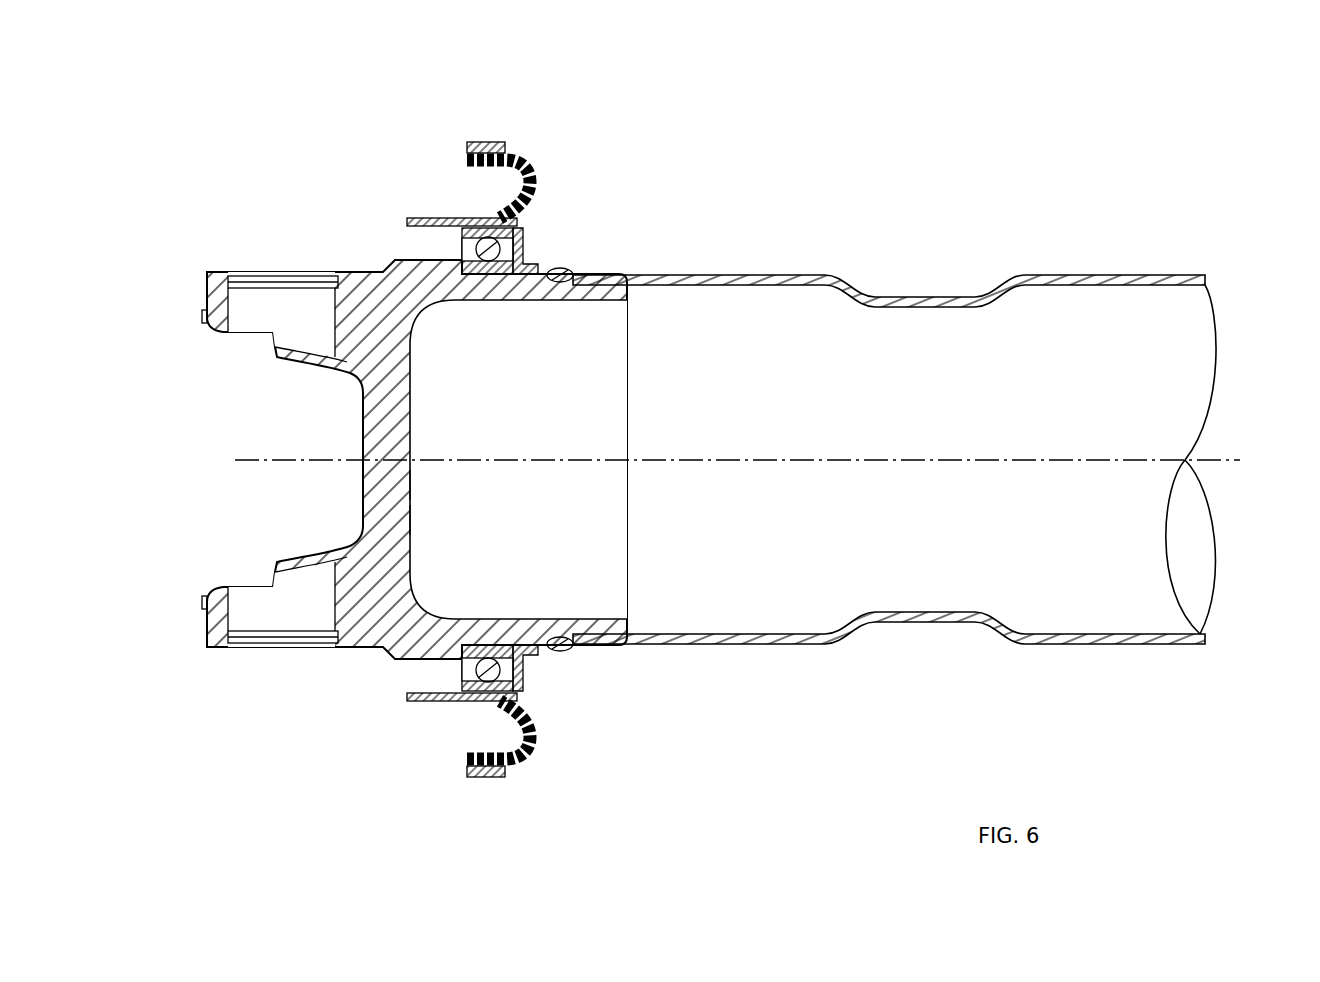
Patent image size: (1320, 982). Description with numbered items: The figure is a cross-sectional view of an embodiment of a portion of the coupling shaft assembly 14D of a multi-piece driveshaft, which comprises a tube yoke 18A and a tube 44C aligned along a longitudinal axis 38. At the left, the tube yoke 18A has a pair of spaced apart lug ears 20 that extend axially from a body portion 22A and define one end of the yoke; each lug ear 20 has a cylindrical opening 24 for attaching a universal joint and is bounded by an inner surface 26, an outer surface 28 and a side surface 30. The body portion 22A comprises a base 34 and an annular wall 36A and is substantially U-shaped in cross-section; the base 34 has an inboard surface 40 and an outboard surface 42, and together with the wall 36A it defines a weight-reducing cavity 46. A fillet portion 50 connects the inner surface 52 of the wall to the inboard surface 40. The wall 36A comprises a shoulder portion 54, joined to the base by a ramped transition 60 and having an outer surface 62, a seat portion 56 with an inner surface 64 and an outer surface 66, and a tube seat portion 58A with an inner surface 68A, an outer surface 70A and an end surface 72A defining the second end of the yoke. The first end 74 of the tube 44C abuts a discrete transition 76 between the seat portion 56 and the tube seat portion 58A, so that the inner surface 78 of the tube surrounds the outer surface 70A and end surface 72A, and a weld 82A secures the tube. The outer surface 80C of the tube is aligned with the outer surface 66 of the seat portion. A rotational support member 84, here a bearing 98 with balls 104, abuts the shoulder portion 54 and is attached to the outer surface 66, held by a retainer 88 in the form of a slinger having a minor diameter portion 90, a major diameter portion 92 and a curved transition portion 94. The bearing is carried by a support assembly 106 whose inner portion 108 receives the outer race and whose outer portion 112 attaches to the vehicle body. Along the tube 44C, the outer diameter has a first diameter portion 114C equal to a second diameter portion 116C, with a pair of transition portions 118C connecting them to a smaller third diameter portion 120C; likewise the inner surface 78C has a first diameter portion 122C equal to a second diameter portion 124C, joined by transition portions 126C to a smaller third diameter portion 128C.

The coupling shaft assembly 14D is at (193, 94).
The tube yoke 18A is at (352, 652).
The lug ears 20 is at (205, 303).
The body portion 22A is at (412, 408).
The cylindrical opening 24 is at (225, 270).
The inner surface 26 is at (312, 365).
The outer surface 28 is at (328, 270).
The side surface 30 is at (205, 294).
The base 34 is at (412, 484).
The wall 36A is at (472, 616).
The longitudinal axis 38 is at (1238, 460).
The inboard surface 40 is at (412, 520).
The outboard surface 42 is at (362, 482).
The tube 44C is at (1165, 275).
The cavity 46 is at (566, 412).
The fillet portion 50 is at (425, 315).
The inner surface 52 is at (478, 300).
The shoulder portion 54 is at (390, 260).
The seat portion 56 is at (515, 288).
The tube seat portion 58A is at (578, 300).
The ramped transition 60 is at (388, 660).
The outer surface 62 is at (405, 258).
The inner surface 64 is at (515, 622).
The outer surface 66 is at (523, 678).
The inner surface 68A is at (562, 627).
The outer surface 70A is at (615, 650).
The end surface 72A is at (635, 625).
The first end 74 is at (625, 268).
The discrete transition 76 is at (565, 270).
The inner surface 78 is at (622, 283).
The inner surface 78C is at (712, 645).
The outer surface 80C is at (765, 645).
The weld 82A is at (560, 652).
The rotational support member 84 is at (440, 668).
The retainer 88 is at (515, 708).
The minor diameter portion 90 is at (522, 258).
The major diameter portion 92 is at (540, 228).
The curved transition portion 94 is at (528, 238).
The bearing 98 is at (462, 255).
The balls 104 is at (535, 185).
The support assembly 106 is at (515, 155).
The inner portion 108 is at (432, 218).
The outer portion 112 is at (487, 142).
The first diameter portion 114C is at (705, 273).
The second diameter portion 116C is at (1068, 275).
The transition portions 118C is at (853, 275).
The third diameter portion 120C is at (932, 297).
The first diameter portion 122C is at (712, 287).
The second diameter portion 124C is at (1065, 287).
The transition portions 126C is at (860, 308).
The third diameter portion 128C is at (935, 308).